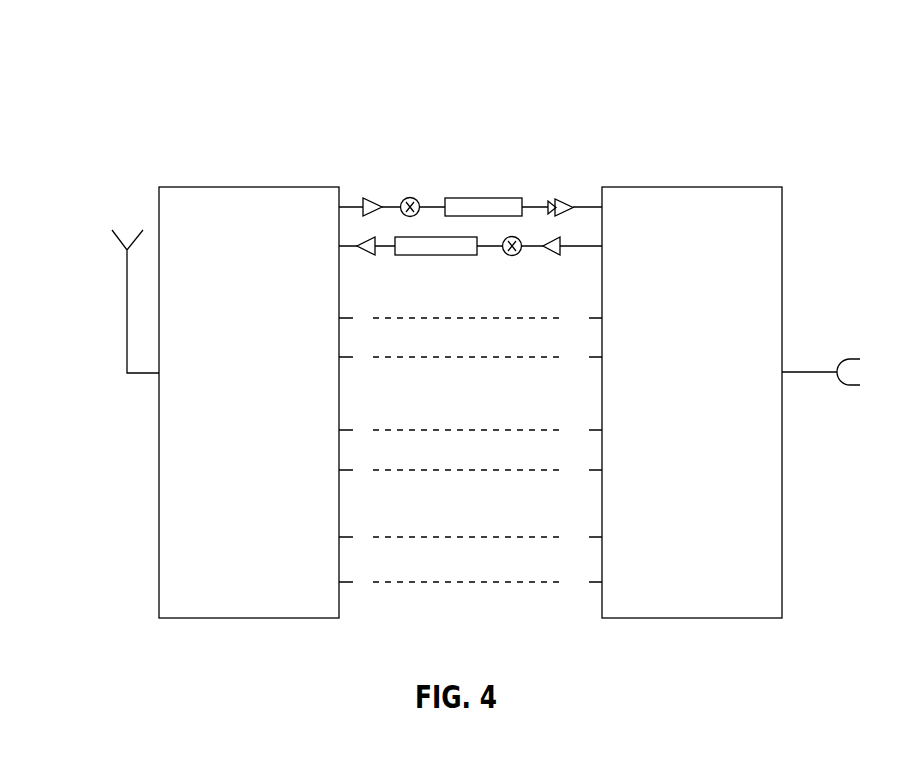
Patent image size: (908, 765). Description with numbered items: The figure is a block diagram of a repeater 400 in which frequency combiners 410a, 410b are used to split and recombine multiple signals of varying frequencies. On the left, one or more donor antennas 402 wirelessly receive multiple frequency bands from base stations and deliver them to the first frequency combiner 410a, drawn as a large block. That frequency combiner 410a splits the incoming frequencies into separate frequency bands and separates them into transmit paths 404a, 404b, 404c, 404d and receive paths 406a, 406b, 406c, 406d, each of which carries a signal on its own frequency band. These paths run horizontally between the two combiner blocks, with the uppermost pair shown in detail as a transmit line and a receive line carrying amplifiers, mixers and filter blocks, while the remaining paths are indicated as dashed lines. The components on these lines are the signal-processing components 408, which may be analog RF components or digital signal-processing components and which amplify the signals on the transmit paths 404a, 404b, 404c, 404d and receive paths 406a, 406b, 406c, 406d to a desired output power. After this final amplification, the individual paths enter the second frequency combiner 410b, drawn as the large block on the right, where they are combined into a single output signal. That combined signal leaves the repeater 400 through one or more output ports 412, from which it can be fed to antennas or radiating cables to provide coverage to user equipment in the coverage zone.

The repeater 400 is at (726, 87).
The donor antenna 402 is at (127, 302).
The transmit path 404a is at (340, 246).
The transmit path 404b is at (340, 357).
The transmit path 404c is at (340, 470).
The transmit path 404d is at (340, 582).
The receive path 406a is at (352, 167).
The receive path 406b is at (500, 321).
The receive path 406c is at (500, 433).
The receive path 406d is at (508, 540).
The signal-processing components 408 is at (481, 184).
The frequency combiner 410a is at (256, 620).
The frequency combiner 410b is at (698, 620).
The output port 412 is at (848, 358).